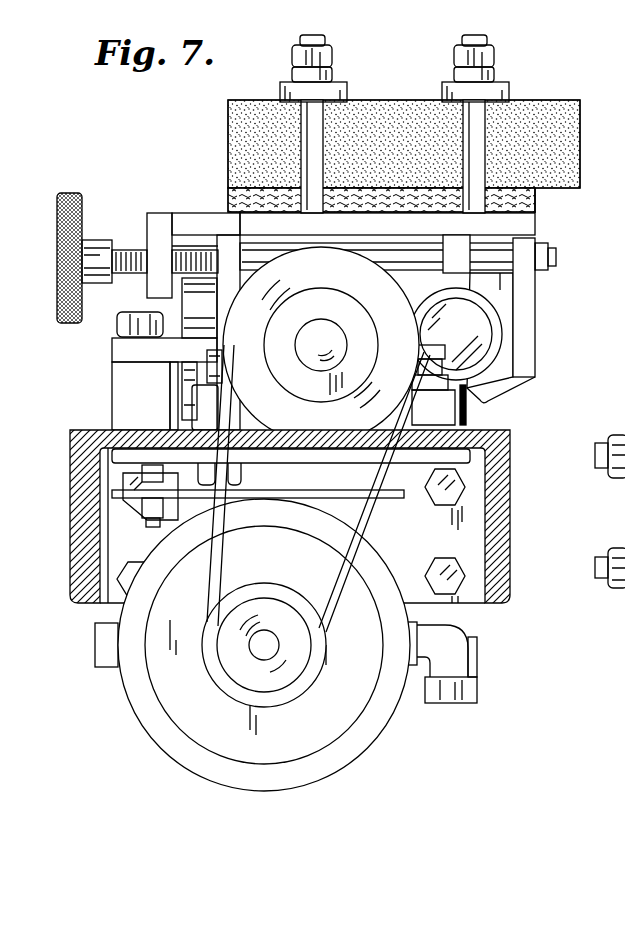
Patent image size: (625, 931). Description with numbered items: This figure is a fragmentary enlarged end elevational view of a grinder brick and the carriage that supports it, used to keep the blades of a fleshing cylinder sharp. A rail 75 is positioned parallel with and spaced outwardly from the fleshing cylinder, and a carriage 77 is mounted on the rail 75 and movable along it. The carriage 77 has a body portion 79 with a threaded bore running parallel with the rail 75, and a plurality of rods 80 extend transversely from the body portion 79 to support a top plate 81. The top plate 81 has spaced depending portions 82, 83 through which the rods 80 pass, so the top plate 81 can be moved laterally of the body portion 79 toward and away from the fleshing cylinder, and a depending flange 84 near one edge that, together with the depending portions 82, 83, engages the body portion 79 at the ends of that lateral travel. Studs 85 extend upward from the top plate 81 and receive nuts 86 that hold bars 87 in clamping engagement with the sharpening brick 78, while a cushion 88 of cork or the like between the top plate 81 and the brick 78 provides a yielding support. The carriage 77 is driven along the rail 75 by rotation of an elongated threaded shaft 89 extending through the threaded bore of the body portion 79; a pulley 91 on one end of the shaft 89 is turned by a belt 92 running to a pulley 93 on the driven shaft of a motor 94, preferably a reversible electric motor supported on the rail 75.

The rail 75 is at (505, 428).
The carriage 77 is at (535, 238).
The sharpening brick 78 is at (584, 88).
The body portion 79 is at (536, 318).
The rods 80 is at (498, 270).
The top plate 81 is at (178, 213).
The depending portion 82 is at (455, 274).
The depending portion 83 is at (248, 243).
The depending flange 84 is at (146, 236).
The stud 85 is at (318, 35).
The nut 86 is at (332, 58).
The bar 87 is at (509, 92).
The cushion 88 is at (535, 200).
The elongated threaded shaft 89 is at (333, 340).
The pulley 91 is at (342, 272).
The belt 92 is at (343, 596).
The pulley 93 is at (296, 688).
The motor 94 is at (312, 790).